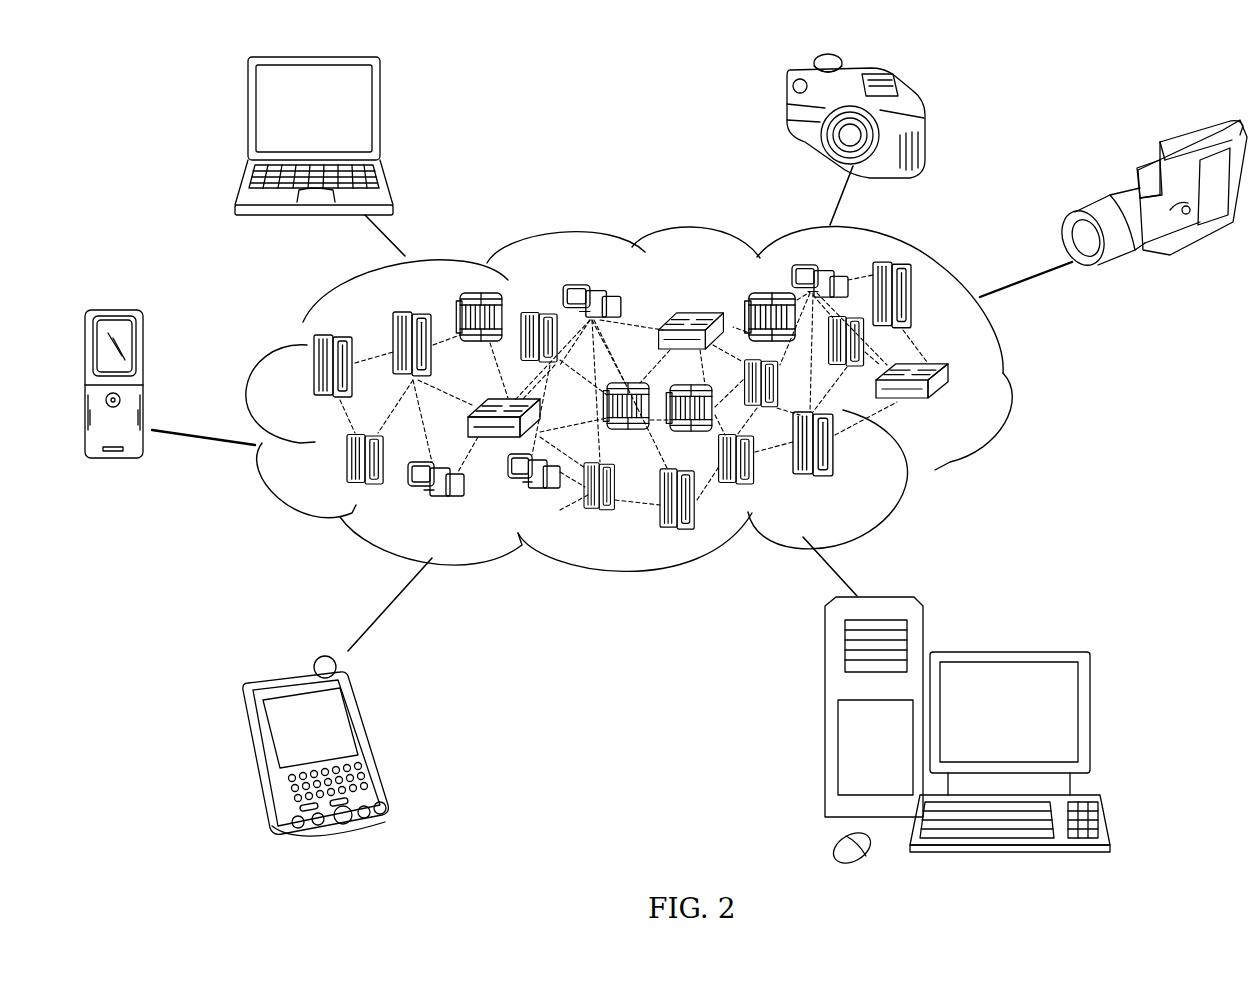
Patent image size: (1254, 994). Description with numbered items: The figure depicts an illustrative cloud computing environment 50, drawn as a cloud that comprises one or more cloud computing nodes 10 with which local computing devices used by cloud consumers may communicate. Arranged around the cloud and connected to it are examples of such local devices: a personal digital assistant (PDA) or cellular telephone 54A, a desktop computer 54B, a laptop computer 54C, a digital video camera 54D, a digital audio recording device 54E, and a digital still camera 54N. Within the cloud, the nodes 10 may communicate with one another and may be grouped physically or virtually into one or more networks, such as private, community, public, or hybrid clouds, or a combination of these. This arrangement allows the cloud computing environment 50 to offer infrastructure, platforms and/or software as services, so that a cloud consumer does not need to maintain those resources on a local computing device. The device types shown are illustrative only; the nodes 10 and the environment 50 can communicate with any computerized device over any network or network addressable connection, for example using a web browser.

The cloud computing environment 50 is at (1004, 373).
The cloud computing node 10 is at (958, 407).
The personal digital assistant (PDA) or cellular telephone 54A is at (372, 741).
The desktop computer 54B is at (1008, 651).
The laptop computer 54C is at (381, 119).
The digital video camera 54D is at (1170, 256).
The digital audio recording device 54E is at (108, 462).
The digital still camera 54N is at (789, 119).